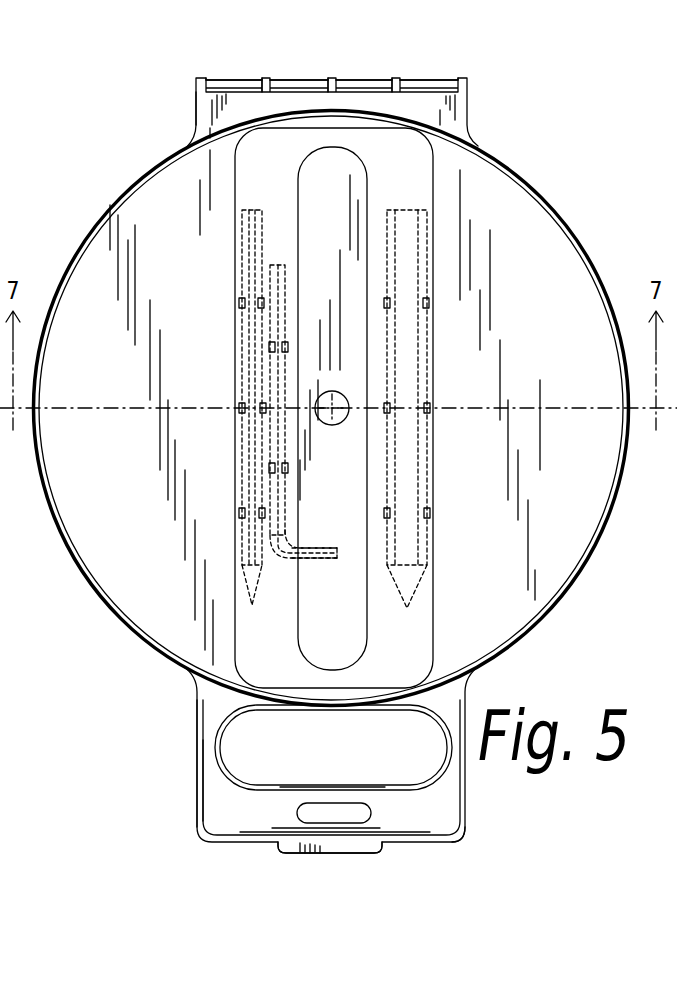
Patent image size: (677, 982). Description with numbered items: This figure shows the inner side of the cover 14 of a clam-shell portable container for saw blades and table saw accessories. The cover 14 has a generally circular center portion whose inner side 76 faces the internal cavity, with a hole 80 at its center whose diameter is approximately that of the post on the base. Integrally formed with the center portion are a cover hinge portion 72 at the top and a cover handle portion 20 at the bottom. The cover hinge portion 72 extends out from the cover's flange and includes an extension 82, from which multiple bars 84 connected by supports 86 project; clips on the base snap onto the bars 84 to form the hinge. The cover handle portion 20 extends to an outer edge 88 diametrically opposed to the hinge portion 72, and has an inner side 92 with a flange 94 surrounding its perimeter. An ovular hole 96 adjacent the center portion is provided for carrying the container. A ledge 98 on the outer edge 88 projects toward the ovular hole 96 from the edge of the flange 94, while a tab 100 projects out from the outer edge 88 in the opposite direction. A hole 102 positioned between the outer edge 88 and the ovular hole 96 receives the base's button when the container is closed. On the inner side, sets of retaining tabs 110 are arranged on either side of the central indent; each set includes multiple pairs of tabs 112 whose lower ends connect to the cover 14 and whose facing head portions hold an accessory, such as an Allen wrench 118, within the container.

The cover 14 is at (557, 237).
The inner side 76 is at (408, 408).
The cover hinge portion 72 is at (455, 112).
The extension 82 is at (218, 118).
The bars 84 is at (234, 82).
The supports 86 is at (266, 84).
The sets of retaining tabs 110 is at (270, 347).
The tabs 112 is at (260, 512).
The hole 80 is at (316, 406).
The Allen wrench 118 is at (322, 558).
The cover handle portion 20 is at (470, 697).
The flange 94 is at (196, 764).
The inner side 92 is at (215, 805).
The ovular hole 96 is at (226, 750).
The hole 102 is at (348, 805).
The ledge 98 is at (420, 832).
The tab 100 is at (280, 845).
The outer edge 88 is at (438, 844).